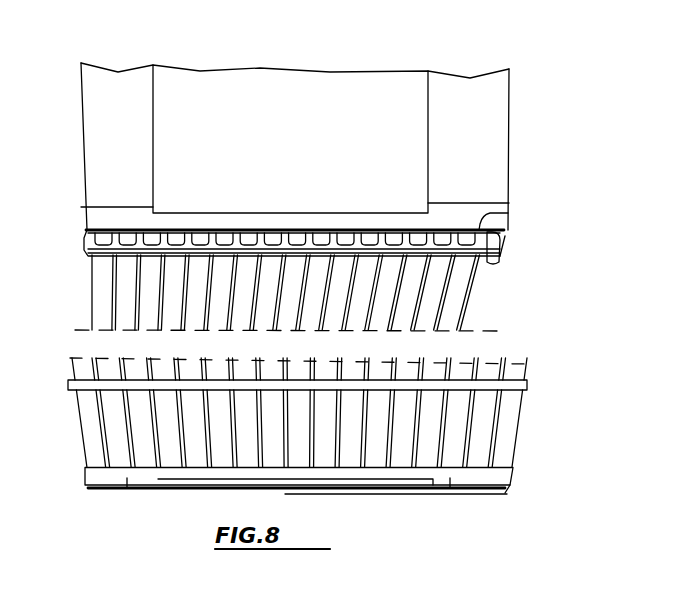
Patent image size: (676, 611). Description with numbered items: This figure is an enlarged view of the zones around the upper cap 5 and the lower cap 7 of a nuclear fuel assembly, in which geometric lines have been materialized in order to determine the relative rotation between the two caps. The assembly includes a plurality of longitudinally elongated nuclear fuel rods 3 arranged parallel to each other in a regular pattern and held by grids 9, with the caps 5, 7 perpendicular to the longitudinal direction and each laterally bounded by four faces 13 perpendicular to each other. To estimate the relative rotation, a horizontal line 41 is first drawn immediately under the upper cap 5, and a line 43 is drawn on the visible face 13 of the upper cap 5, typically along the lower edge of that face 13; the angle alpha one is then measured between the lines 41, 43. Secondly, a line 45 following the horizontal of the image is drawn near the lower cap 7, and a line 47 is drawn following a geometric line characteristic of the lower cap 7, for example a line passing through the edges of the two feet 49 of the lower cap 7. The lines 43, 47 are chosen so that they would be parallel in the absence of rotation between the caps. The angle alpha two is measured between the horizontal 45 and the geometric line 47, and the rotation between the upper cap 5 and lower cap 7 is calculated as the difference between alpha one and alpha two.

The nuclear fuel rods 3 is at (462, 318).
The upper cap 5 is at (380, 216).
The lower cap 7 is at (87, 480).
The grids 9 is at (87, 250).
The face 13 is at (297, 228).
The horizontal line 41 is at (495, 259).
The line 43 is at (475, 226).
The line following the horizontal of the image 45 is at (461, 488).
The line 47 is at (472, 482).
The feet 49 is at (127, 478).